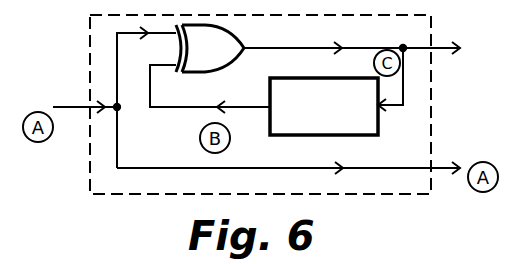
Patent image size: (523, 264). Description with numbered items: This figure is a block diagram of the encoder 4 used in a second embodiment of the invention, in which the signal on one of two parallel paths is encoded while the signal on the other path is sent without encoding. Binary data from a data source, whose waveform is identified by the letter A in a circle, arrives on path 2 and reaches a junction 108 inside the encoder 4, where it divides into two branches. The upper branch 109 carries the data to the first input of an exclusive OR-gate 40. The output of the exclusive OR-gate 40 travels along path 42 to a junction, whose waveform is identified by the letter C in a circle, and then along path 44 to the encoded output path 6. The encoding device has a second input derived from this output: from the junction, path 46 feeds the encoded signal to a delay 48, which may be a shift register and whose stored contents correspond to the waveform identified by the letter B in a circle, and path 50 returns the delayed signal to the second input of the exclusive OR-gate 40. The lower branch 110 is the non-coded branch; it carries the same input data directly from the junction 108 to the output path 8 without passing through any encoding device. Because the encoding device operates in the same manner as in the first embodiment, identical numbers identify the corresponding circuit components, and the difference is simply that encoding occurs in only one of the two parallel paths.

The path 2 is at (83, 106).
The encoder 4 is at (420, 38).
The path 6 is at (443, 46).
The path 8 is at (443, 167).
The exclusive OR-gate 40 is at (228, 37).
The output path of exclusive OR-gate 42 is at (269, 52).
The output path 44 is at (412, 51).
The path 46 is at (404, 96).
The delay 48 is at (350, 137).
The path 50 is at (166, 106).
The junction 108 is at (120, 110).
The branch 109 is at (117, 70).
The non-coded branch 110 is at (200, 169).